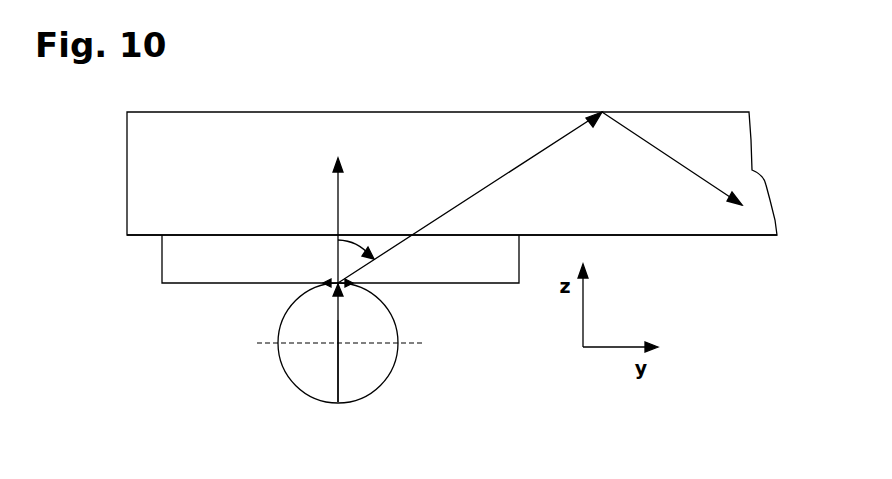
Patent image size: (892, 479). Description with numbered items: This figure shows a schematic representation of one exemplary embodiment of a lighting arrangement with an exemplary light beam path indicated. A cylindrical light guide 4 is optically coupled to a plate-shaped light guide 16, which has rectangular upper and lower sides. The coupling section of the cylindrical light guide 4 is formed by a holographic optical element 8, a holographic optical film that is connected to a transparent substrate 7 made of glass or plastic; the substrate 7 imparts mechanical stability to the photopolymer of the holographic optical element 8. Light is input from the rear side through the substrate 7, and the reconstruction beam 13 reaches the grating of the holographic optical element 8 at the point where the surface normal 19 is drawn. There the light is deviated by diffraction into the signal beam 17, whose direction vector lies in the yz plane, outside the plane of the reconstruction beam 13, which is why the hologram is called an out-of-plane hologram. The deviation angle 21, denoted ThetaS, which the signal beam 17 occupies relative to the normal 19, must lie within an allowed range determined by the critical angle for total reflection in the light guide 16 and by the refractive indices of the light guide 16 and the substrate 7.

The plate-shaped light guide 16 is at (185, 180).
The substrate 7 is at (185, 258).
The holographic optical element 8 is at (337, 280).
The surface normal axis 19 is at (335, 203).
The signal beam 17 is at (482, 187).
The deviation angle 21 is at (354, 234).
The cylindrical light guide 4 is at (283, 370).
The reconstruction beam 13 is at (342, 378).